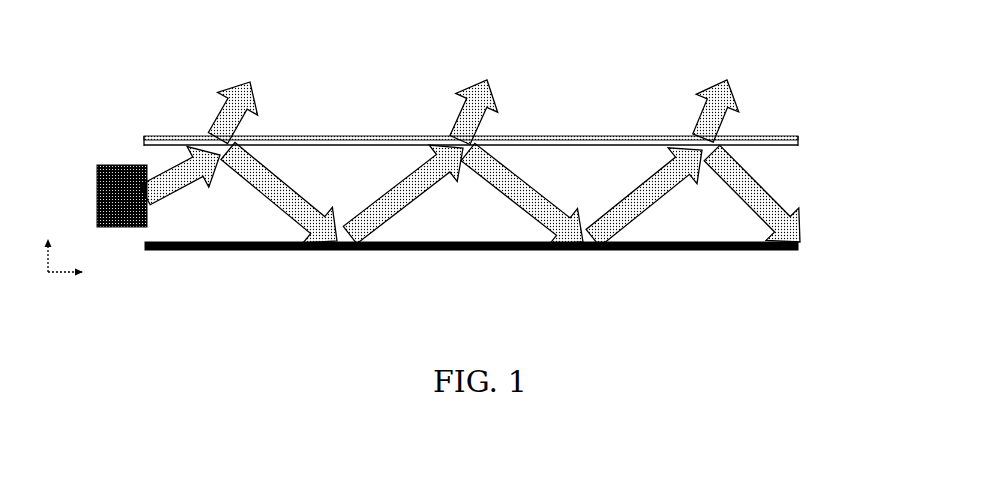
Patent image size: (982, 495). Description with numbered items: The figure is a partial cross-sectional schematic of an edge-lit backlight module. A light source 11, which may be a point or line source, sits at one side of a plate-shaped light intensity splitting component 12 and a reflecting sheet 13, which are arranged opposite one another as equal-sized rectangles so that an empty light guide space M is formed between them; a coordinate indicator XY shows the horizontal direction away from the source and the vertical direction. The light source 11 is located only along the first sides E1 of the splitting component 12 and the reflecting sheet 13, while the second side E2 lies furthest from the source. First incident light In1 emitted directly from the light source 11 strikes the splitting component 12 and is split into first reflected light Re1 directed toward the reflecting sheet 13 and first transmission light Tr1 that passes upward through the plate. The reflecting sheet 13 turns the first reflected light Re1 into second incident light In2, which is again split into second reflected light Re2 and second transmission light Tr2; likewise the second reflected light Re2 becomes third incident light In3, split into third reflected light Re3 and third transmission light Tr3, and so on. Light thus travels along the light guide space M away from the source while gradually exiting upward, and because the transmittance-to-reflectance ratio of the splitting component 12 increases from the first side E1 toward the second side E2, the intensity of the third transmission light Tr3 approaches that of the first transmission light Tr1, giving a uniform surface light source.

The light source 11 is at (98, 195).
The plate-shaped light intensity splitting component 12 is at (743, 138).
The reflecting sheet 13 is at (782, 252).
The first side E1 is at (145, 137).
The second side E2 is at (799, 139).
The light guide space M is at (773, 188).
The first incident light In1 is at (180, 176).
The first transmission light Tr1 is at (232, 113).
The first reflected light Re1 is at (279, 193).
The second incident light In2 is at (403, 194).
The second transmission light Tr2 is at (474, 112).
The second reflected light Re2 is at (522, 193).
The third incident light In3 is at (644, 197).
The third transmission light Tr3 is at (716, 111).
The third reflected light Re3 is at (752, 193).
The coordinate axes XY is at (57, 263).